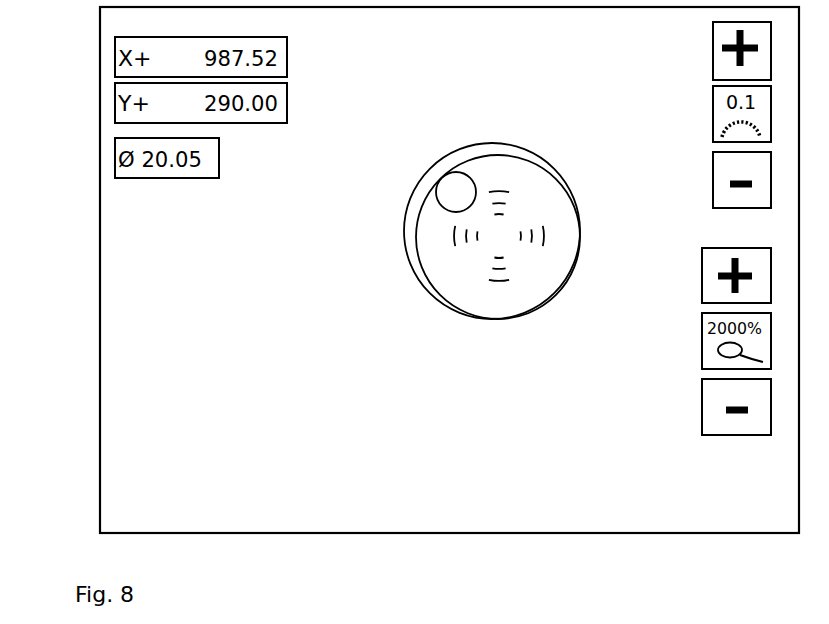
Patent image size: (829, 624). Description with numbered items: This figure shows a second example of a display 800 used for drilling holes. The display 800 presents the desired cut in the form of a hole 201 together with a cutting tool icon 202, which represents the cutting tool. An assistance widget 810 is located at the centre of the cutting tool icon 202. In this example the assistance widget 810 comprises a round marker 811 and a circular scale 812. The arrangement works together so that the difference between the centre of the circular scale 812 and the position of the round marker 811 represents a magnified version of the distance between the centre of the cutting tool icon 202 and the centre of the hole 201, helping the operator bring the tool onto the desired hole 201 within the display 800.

The display 800 is at (130, 264).
The hole 201 is at (411, 258).
The cutting tool icon 202 is at (571, 287).
The assistance widget 810 is at (538, 202).
The round marker 811 is at (462, 175).
The circular scale 812 is at (536, 249).